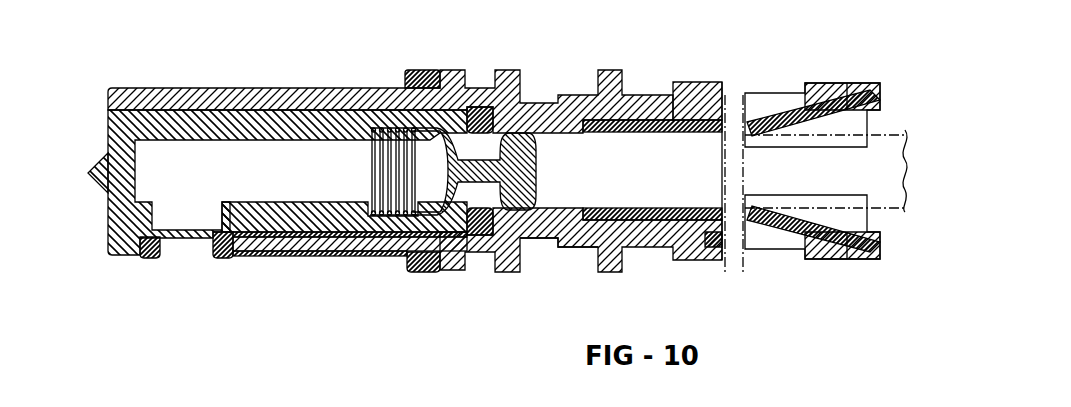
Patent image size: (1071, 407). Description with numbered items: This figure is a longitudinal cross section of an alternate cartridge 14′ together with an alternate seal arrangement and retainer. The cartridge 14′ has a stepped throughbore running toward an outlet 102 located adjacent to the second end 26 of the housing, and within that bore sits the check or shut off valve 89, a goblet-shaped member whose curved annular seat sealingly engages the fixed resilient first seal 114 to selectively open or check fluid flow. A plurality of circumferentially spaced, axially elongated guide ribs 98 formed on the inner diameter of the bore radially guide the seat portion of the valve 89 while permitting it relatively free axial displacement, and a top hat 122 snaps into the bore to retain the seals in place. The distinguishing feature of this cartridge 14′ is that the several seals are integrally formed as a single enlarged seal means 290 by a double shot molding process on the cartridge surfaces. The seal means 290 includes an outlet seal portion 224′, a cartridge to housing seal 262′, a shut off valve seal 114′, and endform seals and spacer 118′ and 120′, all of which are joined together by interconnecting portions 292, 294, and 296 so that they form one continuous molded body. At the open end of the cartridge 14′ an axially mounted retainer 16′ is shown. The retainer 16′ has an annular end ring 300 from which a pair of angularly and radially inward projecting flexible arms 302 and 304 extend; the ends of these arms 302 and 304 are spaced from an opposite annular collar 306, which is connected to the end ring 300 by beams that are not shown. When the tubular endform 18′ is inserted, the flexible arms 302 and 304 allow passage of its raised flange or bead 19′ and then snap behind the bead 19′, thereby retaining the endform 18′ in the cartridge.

The second end 26 is at (105, 128).
The cartridge 14′ is at (240, 110).
The guide ribs 98 is at (360, 153).
The interconnecting portion 294 is at (317, 223).
The check or shut off valve 89 is at (445, 133).
The first seal 114 is at (477, 117).
The top hat 122 is at (670, 100).
The flexible arm 302 is at (783, 107).
The retainer 16′ is at (787, 92).
The annular end ring 300 is at (878, 88).
The endform 18′ is at (905, 208).
The flexible arm 304 is at (780, 237).
The raised flange or bead 19′ is at (733, 227).
The annular collar 306 is at (713, 258).
The spacer 120′ is at (622, 227).
The endform seals 118′ is at (597, 228).
The interconnecting portion 292 is at (517, 207).
The shut off valve seal 114′ is at (477, 240).
The cartridge to housing seal 262′ is at (428, 272).
The interconnecting portion 296 is at (340, 257).
The seal means 290 is at (277, 258).
The outlet 102 is at (218, 258).
The outlet seal portion 224′ is at (152, 258).